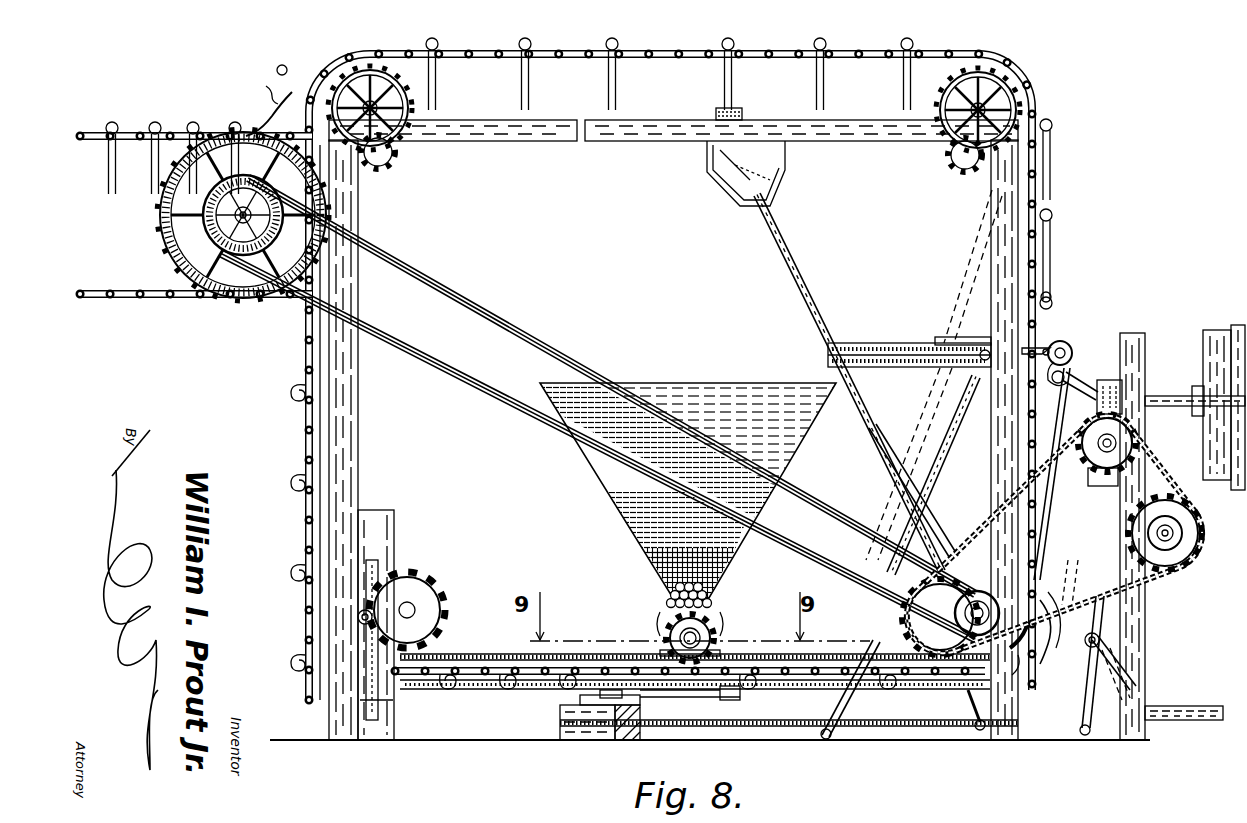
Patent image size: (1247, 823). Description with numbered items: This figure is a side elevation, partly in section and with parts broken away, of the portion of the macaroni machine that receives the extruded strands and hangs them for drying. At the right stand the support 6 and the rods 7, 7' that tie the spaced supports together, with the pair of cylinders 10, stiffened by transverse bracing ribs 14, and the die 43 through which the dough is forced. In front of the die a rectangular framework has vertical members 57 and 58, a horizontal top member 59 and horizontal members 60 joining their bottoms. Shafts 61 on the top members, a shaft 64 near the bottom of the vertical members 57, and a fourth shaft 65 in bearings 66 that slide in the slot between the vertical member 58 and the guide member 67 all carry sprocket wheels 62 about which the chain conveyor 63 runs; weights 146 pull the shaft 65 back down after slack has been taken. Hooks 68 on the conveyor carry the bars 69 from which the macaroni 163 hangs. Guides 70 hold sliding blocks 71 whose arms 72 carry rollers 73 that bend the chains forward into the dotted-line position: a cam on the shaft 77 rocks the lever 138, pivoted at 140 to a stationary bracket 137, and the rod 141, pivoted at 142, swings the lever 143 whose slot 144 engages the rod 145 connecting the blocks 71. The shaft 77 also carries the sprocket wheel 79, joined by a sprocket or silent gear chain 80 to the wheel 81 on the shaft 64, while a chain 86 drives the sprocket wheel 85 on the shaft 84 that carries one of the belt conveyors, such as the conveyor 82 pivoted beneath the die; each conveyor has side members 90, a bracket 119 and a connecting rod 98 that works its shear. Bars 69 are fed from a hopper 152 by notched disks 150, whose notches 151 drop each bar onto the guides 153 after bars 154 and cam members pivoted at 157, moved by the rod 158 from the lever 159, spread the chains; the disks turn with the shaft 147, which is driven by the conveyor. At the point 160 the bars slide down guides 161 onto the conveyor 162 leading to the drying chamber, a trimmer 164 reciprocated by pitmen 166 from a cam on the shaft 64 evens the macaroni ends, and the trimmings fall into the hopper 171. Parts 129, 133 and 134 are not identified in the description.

The support 6 is at (1133, 333).
The rod 7 is at (1195, 382).
The rod 7' is at (1184, 701).
The cylinder 10 is at (1244, 332).
The transverse bracing rib 14 is at (1218, 332).
The die 43 is at (1166, 420).
The vertical member 57 is at (992, 300).
The vertical member 58 is at (346, 216).
The horizontal top member 59 is at (616, 148).
The horizontal member 60 is at (494, 652).
The shaft 61 is at (394, 120).
The sprocket wheel 62 is at (412, 104).
The chain conveyor 63 is at (800, 48).
The shaft 64 is at (1020, 672).
The fourth shaft 65 is at (372, 617).
The bearing 66 is at (396, 590).
The guide member 67 is at (390, 538).
The hook 68 is at (296, 388).
The bar 69 is at (1074, 292).
The guide 70 is at (906, 368).
The block 71 is at (972, 338).
The arm 72 is at (1044, 344).
The roller 73 is at (1070, 346).
The shaft 77 is at (1176, 526).
The sprocket wheel 79 is at (1194, 548).
The chain 80 is at (1170, 580).
The sprocket wheel 81 is at (928, 630).
The conveyor 82 is at (1109, 381).
The shaft 84 is at (1138, 443).
The sprocket wheel 85 is at (1120, 476).
The chain 86 is at (1008, 538).
The side member 90 is at (1090, 374).
The connecting rod 98 is at (1072, 404).
The bracket 119 is at (1070, 372).
The chain 129 is at (1150, 590).
The link 133 is at (1077, 579).
The curved arm 134 is at (1059, 632).
The stationary bracket 137 is at (1120, 660).
The lever 138 is at (1112, 672).
The pivot 140 is at (1100, 636).
The rod 141 is at (960, 719).
The pivot 142 is at (1086, 734).
The lever 143 is at (950, 432).
The slot 144 is at (952, 396).
The rod 145 is at (960, 378).
The weight 146 is at (372, 698).
The shaft 147 is at (712, 632).
The disk 150 is at (712, 620).
The notch 151 is at (668, 640).
The hopper 152 is at (714, 380).
The guide 153 is at (640, 716).
The bar 154 is at (630, 700).
The pivot point 157 is at (640, 722).
The rod 158 is at (748, 700).
The lever 159 is at (982, 732).
The point 160 is at (344, 48).
The guide 161 is at (280, 108).
The conveyor 162 is at (142, 291).
The macaroni 163 is at (527, 96).
The trimmer 164 is at (742, 110).
The pitman 166 is at (812, 298).
The hopper 171 is at (736, 197).